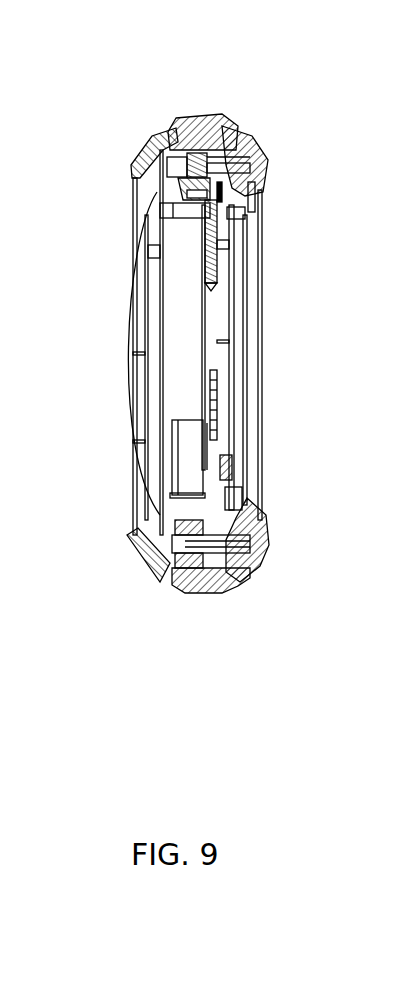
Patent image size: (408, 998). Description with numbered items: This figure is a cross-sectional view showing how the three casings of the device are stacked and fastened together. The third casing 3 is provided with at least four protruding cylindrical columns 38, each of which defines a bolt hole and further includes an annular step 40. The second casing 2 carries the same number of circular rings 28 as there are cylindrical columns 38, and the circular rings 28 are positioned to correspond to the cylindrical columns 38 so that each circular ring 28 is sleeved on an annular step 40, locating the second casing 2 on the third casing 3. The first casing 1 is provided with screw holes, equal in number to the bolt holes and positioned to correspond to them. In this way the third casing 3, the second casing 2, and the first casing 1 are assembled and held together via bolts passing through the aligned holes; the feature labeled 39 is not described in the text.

The first casing 1 is at (252, 238).
The second casing 2 is at (190, 118).
The third casing 3 is at (143, 230).
The circular ring 28 is at (252, 198).
The cylindrical column 38 is at (178, 192).
The bezel body 39 is at (247, 147).
The annular step 40 is at (170, 128).